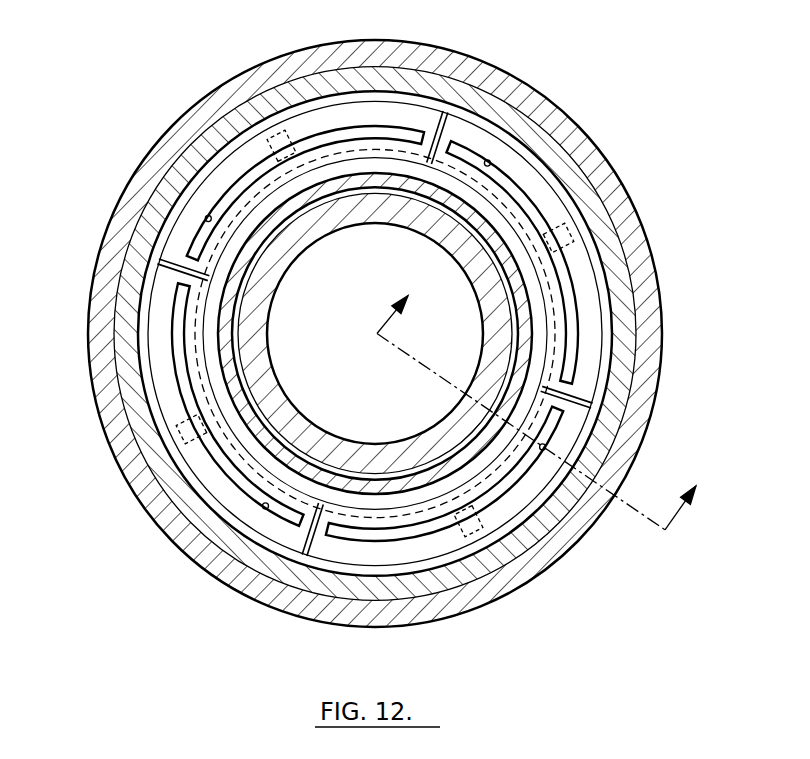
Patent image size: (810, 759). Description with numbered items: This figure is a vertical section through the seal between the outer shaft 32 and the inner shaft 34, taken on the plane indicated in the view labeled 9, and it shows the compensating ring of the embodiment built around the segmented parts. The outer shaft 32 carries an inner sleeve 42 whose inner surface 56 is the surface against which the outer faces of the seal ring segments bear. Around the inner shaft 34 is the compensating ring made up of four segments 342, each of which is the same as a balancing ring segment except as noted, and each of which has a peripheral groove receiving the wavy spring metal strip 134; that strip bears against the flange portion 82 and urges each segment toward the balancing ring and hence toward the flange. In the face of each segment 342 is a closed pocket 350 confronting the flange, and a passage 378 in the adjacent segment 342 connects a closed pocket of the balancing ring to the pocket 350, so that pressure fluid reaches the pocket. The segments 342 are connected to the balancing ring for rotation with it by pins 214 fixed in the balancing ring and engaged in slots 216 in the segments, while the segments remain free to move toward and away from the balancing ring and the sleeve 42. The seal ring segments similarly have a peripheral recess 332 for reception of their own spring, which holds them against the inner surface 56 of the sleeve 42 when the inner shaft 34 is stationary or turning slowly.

The outer shaft 32 is at (375, 333).
The inner sleeve 42 is at (375, 334).
The inner surface of sleeve 56 is at (365, 333).
The compensating ring segment 342 is at (359, 319).
The closed pocket 350 is at (374, 281).
The passage 378 is at (380, 344).
The pin 214 is at (380, 326).
The slot 216 is at (390, 304).
The peripheral recess 332 is at (291, 334).
The flange portion 82 is at (375, 333).
The inner shaft 34 is at (375, 333).
The wavy spring metal strip 134 is at (375, 333).
The section line 9- 9 is at (543, 402).